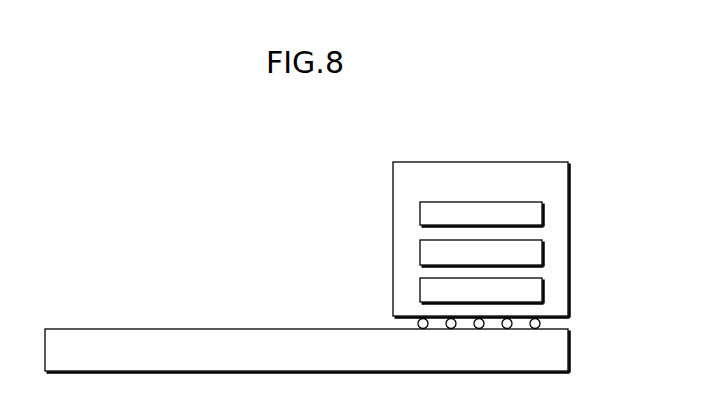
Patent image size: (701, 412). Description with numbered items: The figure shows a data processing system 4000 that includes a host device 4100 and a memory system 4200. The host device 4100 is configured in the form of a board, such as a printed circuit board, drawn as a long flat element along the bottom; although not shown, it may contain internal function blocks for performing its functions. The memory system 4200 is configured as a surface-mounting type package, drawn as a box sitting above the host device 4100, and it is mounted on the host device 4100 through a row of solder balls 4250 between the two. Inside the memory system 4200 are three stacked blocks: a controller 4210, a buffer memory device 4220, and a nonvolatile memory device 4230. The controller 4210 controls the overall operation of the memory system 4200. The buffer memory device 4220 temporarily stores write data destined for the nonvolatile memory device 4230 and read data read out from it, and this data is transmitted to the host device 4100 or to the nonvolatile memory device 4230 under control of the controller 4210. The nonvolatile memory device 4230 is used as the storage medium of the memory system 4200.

The data processing system 4000 is at (115, 139).
The host device 4100 is at (307, 351).
The memory system 4200 is at (481, 240).
The controller 4210 is at (482, 214).
The buffer memory device 4220 is at (482, 253).
The nonvolatile memory device 4230 is at (482, 291).
The solder balls 4250 is at (552, 324).